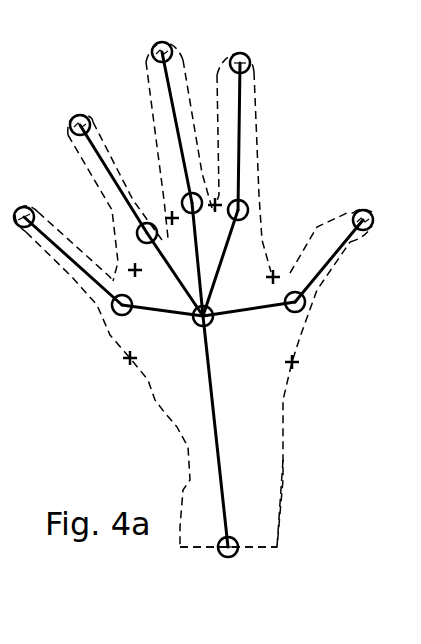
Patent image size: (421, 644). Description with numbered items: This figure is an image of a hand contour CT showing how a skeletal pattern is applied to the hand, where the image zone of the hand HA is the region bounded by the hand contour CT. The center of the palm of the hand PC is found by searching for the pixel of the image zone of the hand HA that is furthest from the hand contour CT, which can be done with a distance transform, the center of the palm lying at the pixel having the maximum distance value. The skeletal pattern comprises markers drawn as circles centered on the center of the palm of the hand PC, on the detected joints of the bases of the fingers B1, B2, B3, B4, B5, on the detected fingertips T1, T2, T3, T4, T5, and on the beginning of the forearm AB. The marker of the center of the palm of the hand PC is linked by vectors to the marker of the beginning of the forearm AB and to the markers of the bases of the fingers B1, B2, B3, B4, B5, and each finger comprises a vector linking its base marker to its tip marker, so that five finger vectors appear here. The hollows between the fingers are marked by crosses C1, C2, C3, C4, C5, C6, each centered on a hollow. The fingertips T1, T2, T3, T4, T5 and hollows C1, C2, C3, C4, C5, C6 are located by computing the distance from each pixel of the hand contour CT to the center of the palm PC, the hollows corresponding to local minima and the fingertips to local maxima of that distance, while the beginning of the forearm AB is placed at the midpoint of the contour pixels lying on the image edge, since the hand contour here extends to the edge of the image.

The fingertip T1 is at (370, 229).
The fingertip T2 is at (242, 52).
The fingertip T3 is at (165, 42).
The fingertip T4 is at (85, 115).
The fingertip T5 is at (28, 207).
The joint of the base of the finger B1 is at (305, 313).
The joint of the base of the finger B2 is at (248, 210).
The joint of the base of the finger B3 is at (194, 213).
The joint of the base of the finger B4 is at (137, 233).
The joint of the base of the finger B5 is at (131, 312).
The hollow between fingers C1 is at (297, 366).
The hollow between fingers C2 is at (278, 272).
The hollow between fingers C3 is at (222, 203).
The hollow between fingers C4 is at (168, 212).
The hollow between fingers C5 is at (130, 275).
The hollow between fingers C6 is at (126, 360).
The center of the palm of the hand PC is at (210, 325).
The beginning of the forearm AB is at (230, 557).
The image zone of the hand HA is at (178, 412).
The hand contour CT is at (282, 492).